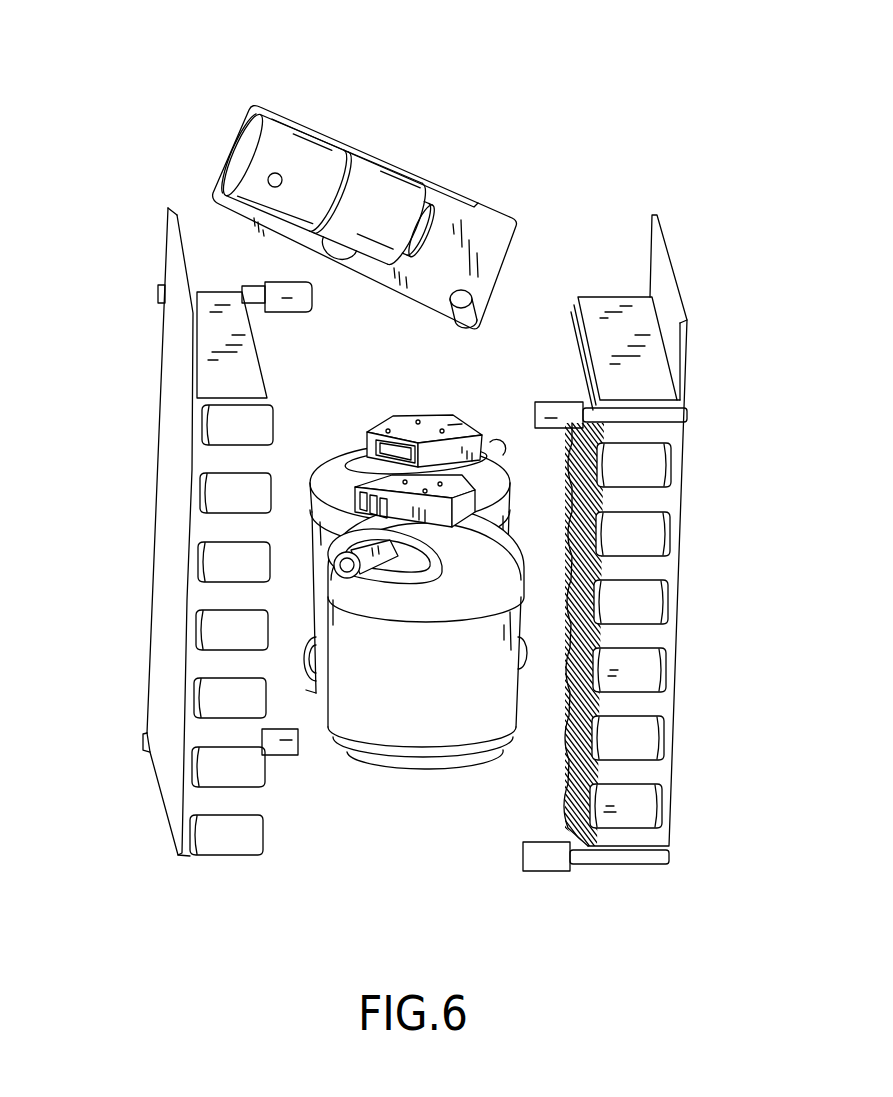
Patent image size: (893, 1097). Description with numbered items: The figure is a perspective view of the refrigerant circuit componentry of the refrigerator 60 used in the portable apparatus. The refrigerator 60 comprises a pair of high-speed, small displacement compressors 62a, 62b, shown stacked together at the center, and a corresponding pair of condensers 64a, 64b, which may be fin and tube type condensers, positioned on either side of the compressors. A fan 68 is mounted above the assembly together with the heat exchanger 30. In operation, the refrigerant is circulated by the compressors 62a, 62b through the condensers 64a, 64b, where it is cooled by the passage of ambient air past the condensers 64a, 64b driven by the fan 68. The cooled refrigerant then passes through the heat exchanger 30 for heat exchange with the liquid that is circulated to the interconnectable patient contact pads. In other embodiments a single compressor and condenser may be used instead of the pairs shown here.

The heat exchanger 30 is at (321, 170).
The fan 68 is at (235, 170).
The refrigerator 60 is at (587, 230).
The compressor 62a is at (318, 501).
The compressor 62b is at (327, 700).
The condenser 64a is at (677, 625).
The condenser 64b is at (155, 612).